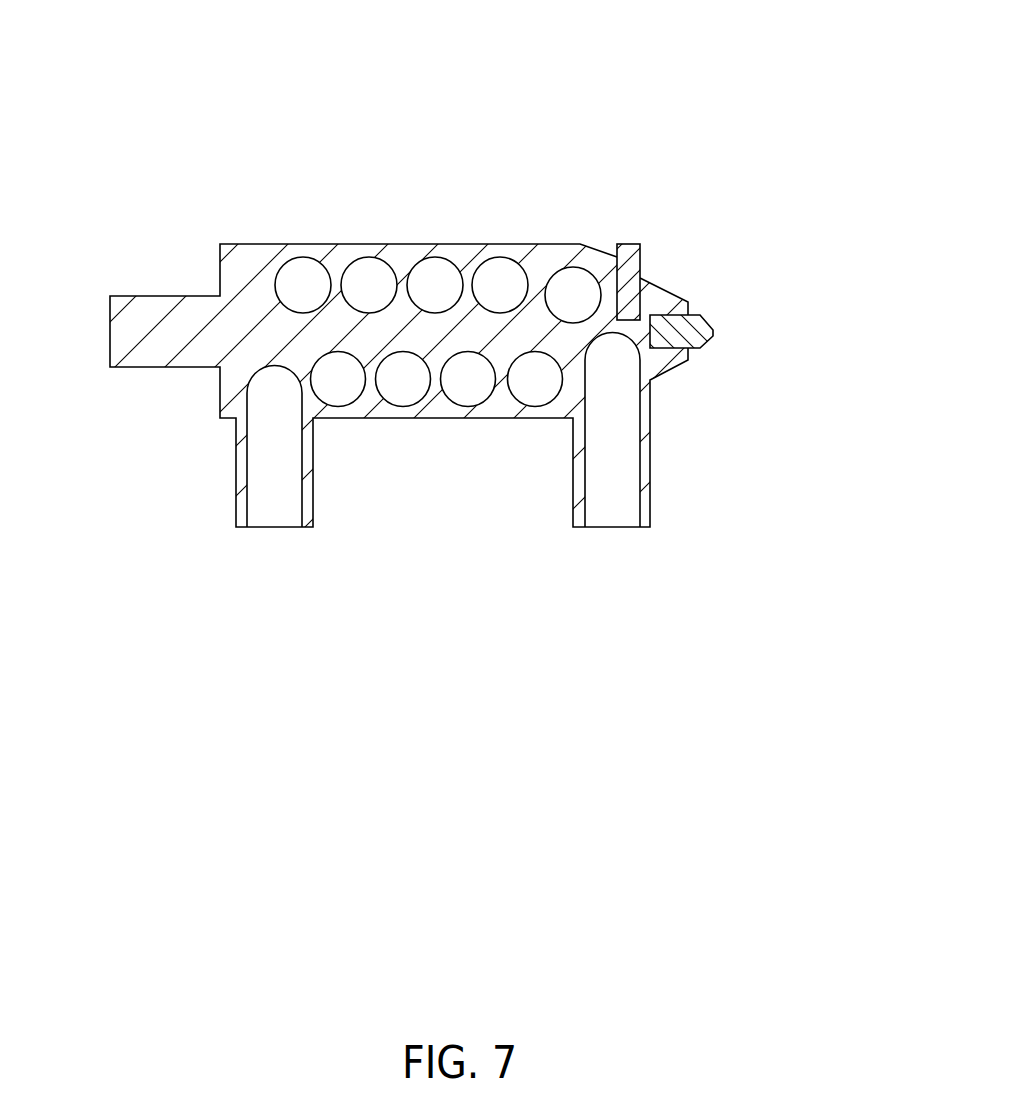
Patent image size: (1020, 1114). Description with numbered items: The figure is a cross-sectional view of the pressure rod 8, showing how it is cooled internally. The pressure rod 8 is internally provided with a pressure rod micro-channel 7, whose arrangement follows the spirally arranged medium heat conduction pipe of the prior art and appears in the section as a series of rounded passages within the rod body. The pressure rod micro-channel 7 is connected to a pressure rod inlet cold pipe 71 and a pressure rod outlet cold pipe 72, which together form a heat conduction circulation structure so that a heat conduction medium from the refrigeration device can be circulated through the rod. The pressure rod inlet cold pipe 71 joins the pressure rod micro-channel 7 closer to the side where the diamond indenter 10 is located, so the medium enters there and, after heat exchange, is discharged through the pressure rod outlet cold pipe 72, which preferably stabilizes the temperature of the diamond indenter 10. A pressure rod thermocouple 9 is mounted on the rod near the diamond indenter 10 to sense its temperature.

The pressure rod 8 is at (475, 70).
The pressure rod micro-channel 7 is at (468, 379).
The pressure rod inlet cold pipe 71 is at (617, 457).
The pressure rod outlet cold pipe 72 is at (270, 463).
The pressure rod thermocouple 9 is at (640, 258).
The diamond indenter 10 is at (700, 340).